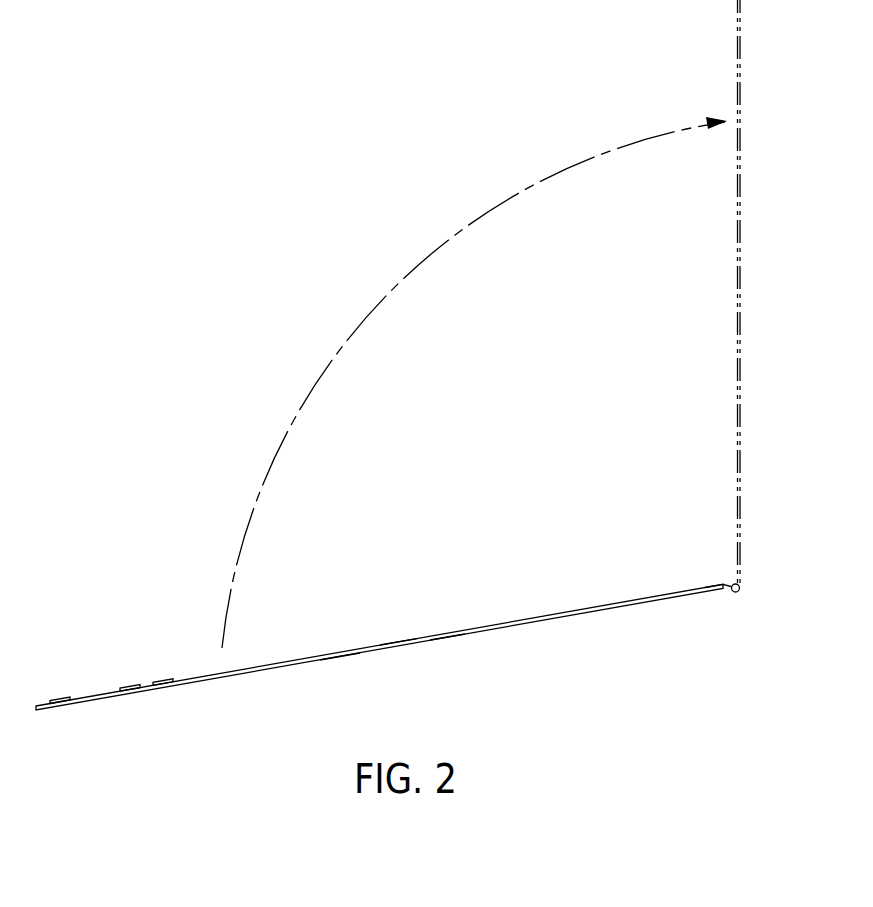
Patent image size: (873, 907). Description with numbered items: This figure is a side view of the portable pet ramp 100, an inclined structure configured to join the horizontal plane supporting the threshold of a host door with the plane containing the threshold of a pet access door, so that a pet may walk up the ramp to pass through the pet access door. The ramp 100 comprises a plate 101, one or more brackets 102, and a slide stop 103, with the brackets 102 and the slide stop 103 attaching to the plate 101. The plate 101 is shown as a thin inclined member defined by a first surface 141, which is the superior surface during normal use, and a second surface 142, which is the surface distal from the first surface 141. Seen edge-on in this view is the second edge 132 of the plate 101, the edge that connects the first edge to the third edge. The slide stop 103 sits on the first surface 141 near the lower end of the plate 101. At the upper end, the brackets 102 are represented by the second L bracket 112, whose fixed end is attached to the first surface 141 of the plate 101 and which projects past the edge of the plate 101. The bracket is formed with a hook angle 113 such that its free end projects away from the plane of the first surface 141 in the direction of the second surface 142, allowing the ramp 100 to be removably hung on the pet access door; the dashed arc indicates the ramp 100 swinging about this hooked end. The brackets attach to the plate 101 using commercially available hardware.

The portable pet ramp 100 is at (383, 606).
The plate 101 is at (272, 664).
The brackets 102 is at (736, 592).
The slide stop 103 is at (131, 687).
The second L bracket 112 is at (722, 583).
The hook angle 113 is at (739, 583).
The second edge 132 is at (447, 637).
The first surface 141 is at (417, 638).
The second surface 142 is at (340, 656).